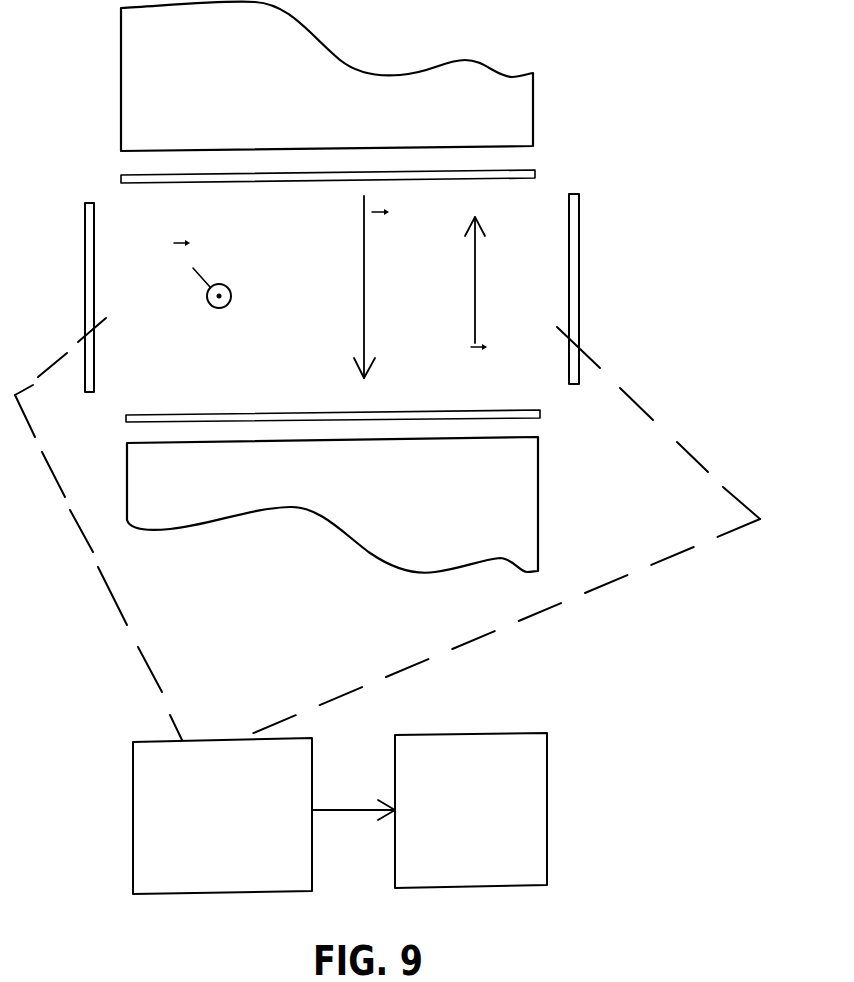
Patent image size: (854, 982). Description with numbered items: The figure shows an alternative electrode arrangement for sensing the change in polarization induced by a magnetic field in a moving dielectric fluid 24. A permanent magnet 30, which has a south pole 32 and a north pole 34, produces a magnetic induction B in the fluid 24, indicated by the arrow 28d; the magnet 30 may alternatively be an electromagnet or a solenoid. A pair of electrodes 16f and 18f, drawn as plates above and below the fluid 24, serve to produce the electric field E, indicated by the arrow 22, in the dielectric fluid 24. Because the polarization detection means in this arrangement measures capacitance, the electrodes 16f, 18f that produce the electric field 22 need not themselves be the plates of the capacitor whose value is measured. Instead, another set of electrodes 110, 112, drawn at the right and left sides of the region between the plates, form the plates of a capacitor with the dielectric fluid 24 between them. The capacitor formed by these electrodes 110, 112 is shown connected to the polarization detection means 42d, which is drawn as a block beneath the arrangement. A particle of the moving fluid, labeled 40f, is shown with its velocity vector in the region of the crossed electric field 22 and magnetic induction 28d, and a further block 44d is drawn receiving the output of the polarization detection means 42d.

The permanent magnet 30 is at (121, 88).
The south pole 32 is at (243, 100).
The north pole 34 is at (463, 493).
The electrode 16f is at (536, 171).
The electrode 18f is at (540, 413).
The dielectric fluid 24 is at (292, 228).
The electric field E 22 is at (362, 310).
The magnetic induction B 28d is at (475, 288).
The charged particle 40f is at (217, 308).
The electrode 110 is at (580, 232).
The electrode 112 is at (85, 248).
The polarization detection means 42d is at (135, 826).
The signal processor 44d is at (543, 797).